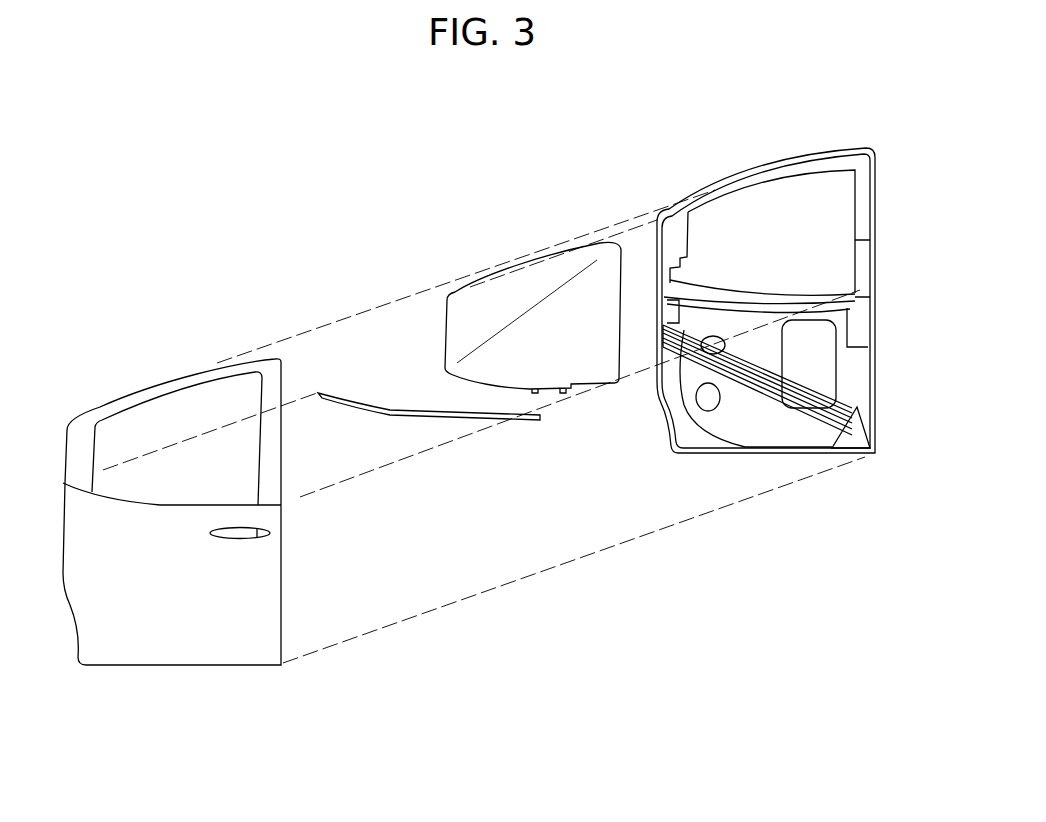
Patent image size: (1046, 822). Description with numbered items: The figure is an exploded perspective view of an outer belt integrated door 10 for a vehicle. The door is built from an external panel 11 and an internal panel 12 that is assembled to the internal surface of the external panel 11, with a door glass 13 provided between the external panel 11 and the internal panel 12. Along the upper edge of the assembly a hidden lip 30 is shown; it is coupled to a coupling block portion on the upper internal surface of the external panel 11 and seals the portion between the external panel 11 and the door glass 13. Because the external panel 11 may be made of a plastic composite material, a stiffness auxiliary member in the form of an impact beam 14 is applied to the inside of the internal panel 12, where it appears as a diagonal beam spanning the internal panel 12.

The outer belt integrated door 10 is at (748, 97).
The external panel 11 is at (180, 623).
The internal panel 12 is at (768, 353).
The door glass 13 is at (505, 298).
The impact beam 14 is at (765, 397).
The hidden lip 30 is at (387, 426).